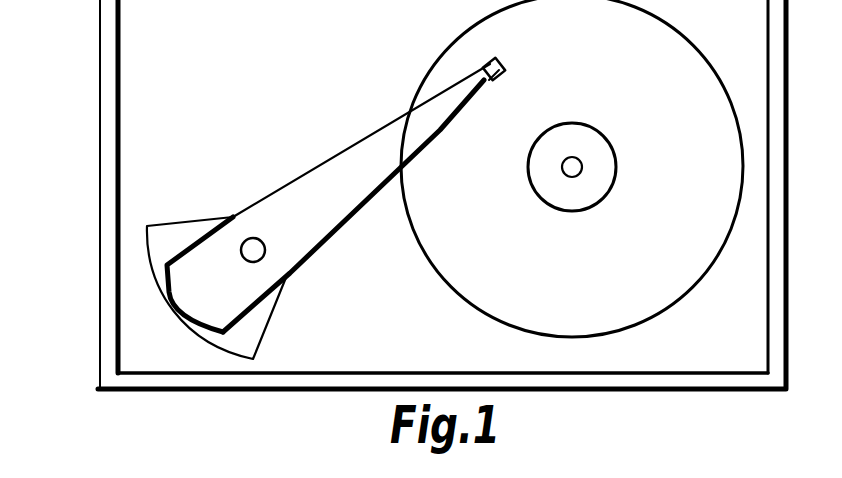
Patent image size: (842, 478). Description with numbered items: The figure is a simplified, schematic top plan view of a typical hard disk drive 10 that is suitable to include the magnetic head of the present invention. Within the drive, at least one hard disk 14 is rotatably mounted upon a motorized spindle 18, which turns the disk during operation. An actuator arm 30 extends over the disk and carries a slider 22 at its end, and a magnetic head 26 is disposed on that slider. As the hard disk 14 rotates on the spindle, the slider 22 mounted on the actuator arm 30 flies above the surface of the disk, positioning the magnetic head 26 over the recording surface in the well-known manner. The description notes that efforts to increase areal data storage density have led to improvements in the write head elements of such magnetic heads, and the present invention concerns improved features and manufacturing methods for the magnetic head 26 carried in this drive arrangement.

The hard disk drive 10 is at (98, 100).
The hard disk 14 is at (522, 273).
The motorized spindle 18 is at (603, 178).
The slider 22 is at (497, 86).
The magnetic head 26 is at (503, 63).
The actuator arm 30 is at (293, 181).